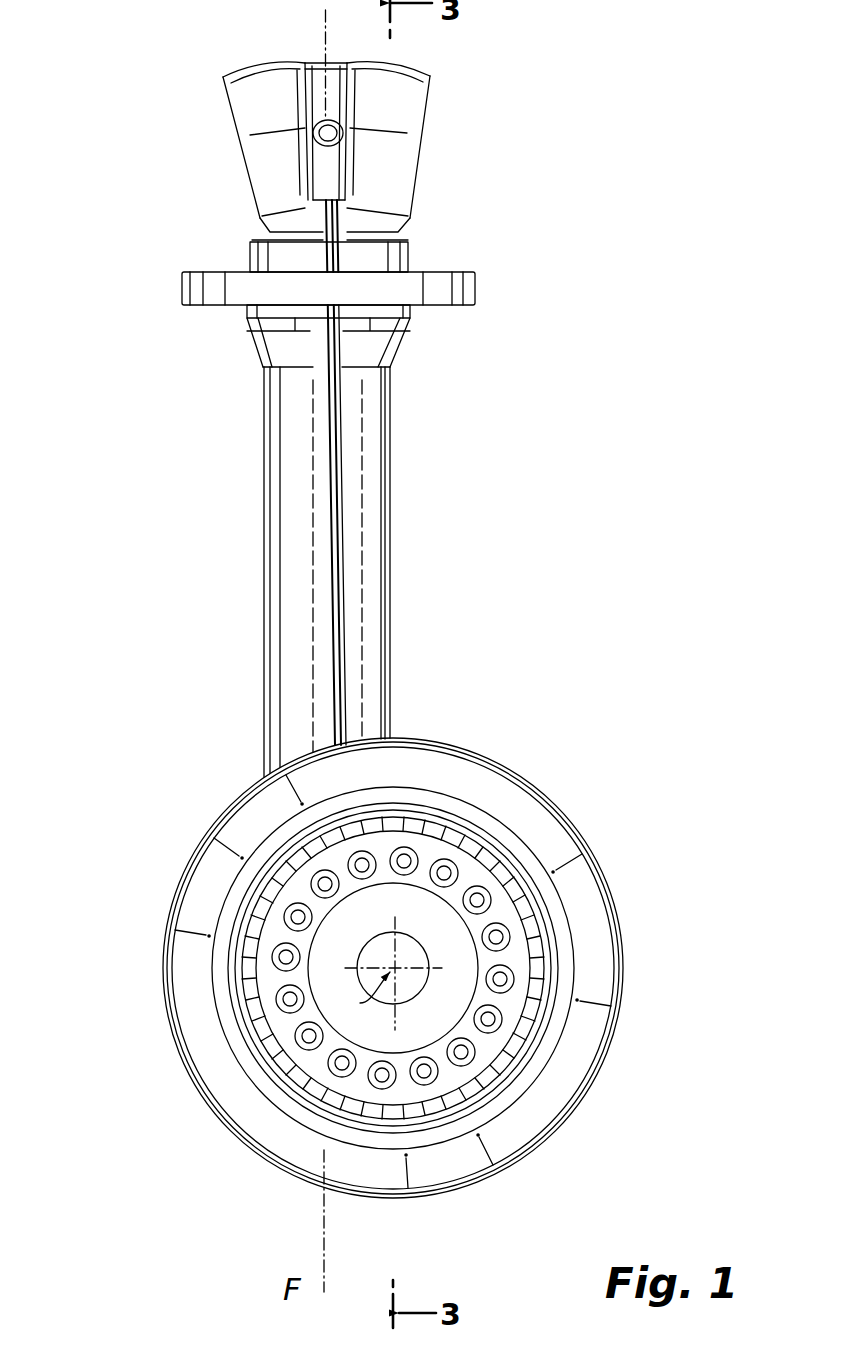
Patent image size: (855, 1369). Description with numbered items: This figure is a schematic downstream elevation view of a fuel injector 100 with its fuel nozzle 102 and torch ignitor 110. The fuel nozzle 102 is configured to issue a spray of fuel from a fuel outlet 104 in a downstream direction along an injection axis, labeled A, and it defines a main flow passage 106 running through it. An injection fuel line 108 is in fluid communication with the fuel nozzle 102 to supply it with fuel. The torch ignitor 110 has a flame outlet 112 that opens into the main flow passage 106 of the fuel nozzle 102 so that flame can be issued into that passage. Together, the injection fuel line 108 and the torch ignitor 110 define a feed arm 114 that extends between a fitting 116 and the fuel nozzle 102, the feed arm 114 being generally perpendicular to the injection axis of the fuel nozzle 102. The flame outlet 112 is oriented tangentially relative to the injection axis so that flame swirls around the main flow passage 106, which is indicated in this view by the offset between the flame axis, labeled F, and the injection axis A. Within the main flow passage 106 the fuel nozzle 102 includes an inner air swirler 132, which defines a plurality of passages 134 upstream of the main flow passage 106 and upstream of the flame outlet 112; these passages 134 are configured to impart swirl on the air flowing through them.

The fuel injector 100 is at (112, 212).
The fuel nozzle 102 is at (187, 786).
The fuel outlet 104 is at (557, 898).
The main flow passage 106 is at (266, 962).
The injection fuel line 108 is at (327, 497).
The torch ignitor 110 is at (381, 554).
The flame outlet 112 is at (341, 845).
The feed arm 114 is at (230, 528).
The fitting 116 is at (203, 150).
The inner air swirler 132 is at (392, 1038).
The passages 134 is at (442, 864).